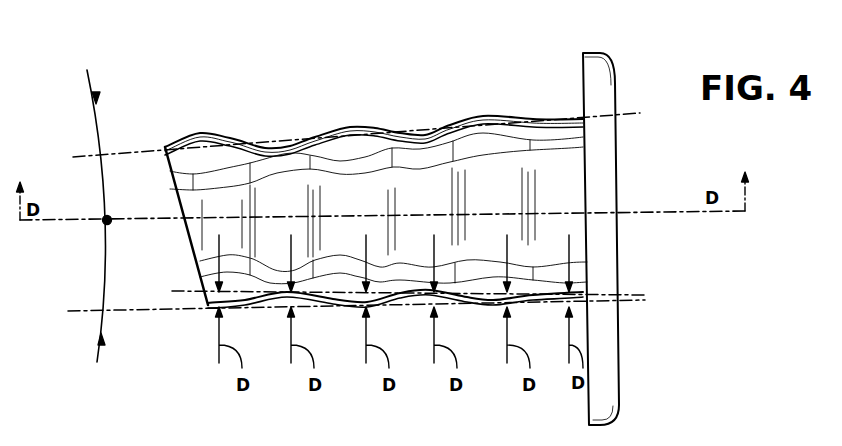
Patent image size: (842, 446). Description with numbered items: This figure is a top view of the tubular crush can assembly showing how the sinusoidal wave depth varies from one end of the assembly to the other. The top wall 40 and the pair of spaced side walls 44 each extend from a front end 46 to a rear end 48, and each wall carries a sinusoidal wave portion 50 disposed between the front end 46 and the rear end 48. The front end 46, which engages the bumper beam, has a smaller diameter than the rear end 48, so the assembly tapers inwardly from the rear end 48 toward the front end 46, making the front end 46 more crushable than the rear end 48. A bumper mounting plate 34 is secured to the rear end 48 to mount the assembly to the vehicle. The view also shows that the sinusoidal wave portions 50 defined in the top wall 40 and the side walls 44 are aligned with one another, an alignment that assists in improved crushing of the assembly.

The bumper mounting plate 34 is at (617, 188).
The top wall 40 is at (417, 170).
The side walls 44 is at (528, 118).
The front end 46 is at (172, 175).
The rear end 48 is at (585, 143).
The sinusoidal wave portion 50 is at (247, 140).